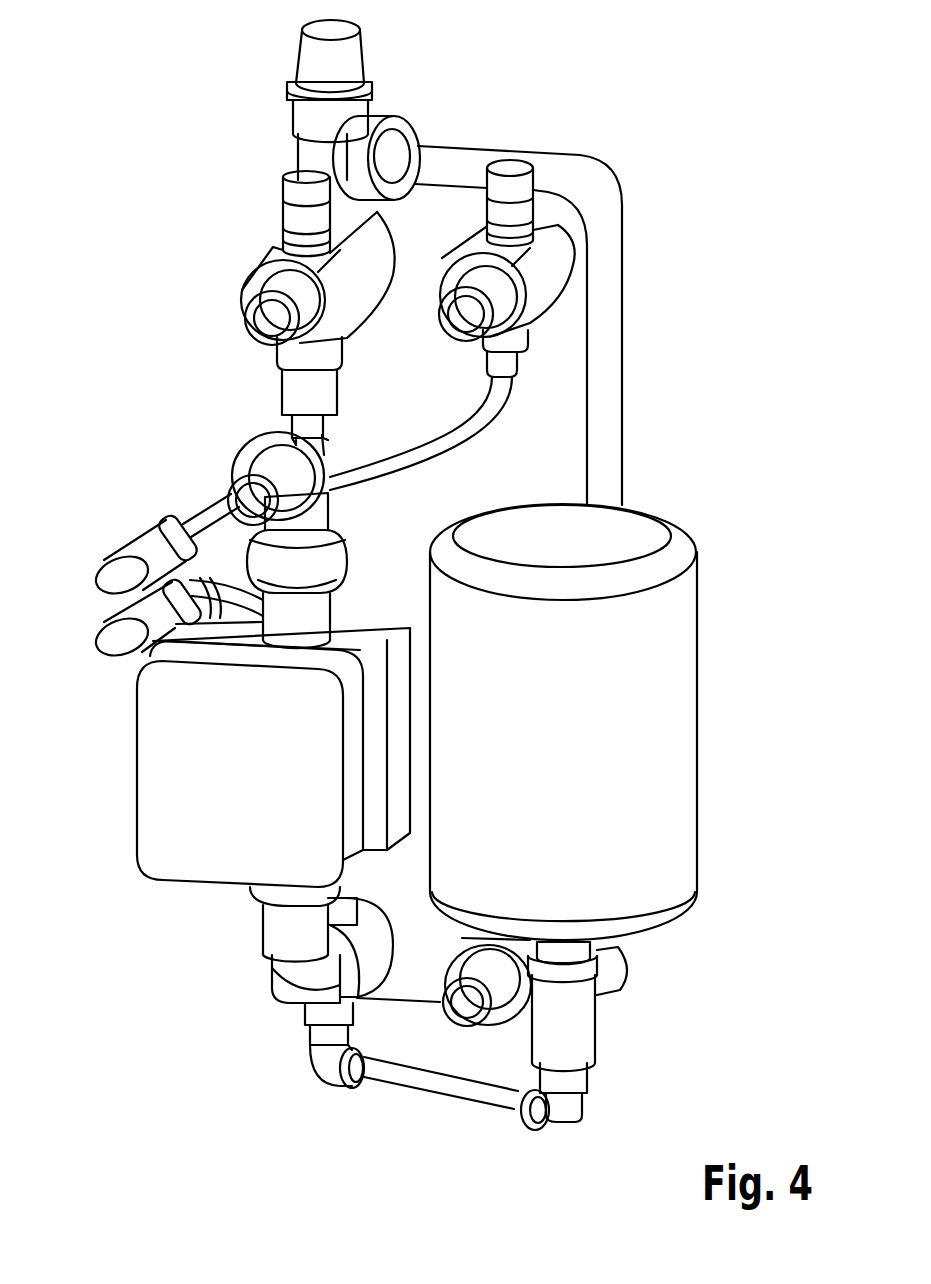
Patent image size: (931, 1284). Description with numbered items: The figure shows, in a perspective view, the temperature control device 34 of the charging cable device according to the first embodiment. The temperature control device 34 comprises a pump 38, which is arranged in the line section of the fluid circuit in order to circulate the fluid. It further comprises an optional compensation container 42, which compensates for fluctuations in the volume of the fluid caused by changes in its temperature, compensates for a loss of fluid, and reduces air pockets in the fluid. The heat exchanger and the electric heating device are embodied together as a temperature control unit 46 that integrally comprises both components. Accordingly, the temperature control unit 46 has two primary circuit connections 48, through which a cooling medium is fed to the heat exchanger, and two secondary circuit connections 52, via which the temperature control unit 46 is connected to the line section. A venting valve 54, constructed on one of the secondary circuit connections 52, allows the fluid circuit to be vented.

The temperature control device 34 is at (672, 153).
The pump 38 is at (153, 770).
The compensation container 42 is at (678, 680).
The temperature control unit 46 is at (603, 409).
The primary circuit connections 48 is at (527, 283).
The secondary circuit connections 52 is at (270, 320).
The venting valve 54 is at (303, 114).